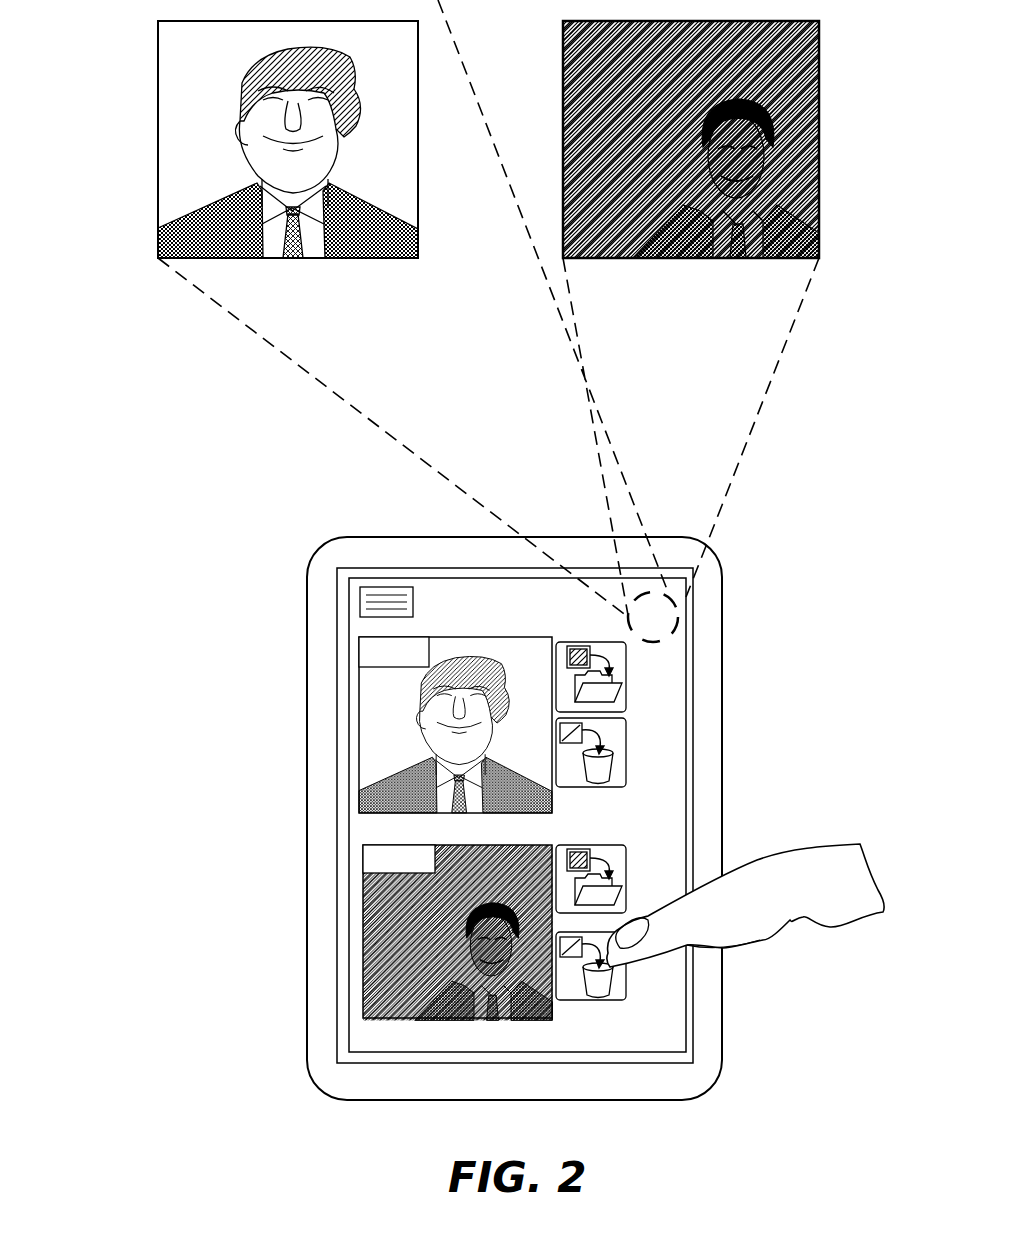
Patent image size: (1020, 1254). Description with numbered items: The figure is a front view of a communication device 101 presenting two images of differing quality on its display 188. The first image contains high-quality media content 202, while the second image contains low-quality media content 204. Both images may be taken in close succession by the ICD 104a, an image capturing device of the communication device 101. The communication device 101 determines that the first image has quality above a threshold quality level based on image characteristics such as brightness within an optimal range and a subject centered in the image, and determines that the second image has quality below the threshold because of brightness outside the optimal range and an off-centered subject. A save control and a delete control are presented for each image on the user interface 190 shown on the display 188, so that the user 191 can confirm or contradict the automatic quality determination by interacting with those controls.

The communication device 101 is at (307, 665).
The display 188 is at (337, 728).
The user interface 190 is at (533, 628).
The ICD 104a is at (677, 627).
The user 191 is at (846, 925).
The high-quality media content 202 is at (172, 76).
The low-quality media content 204 is at (572, 146).